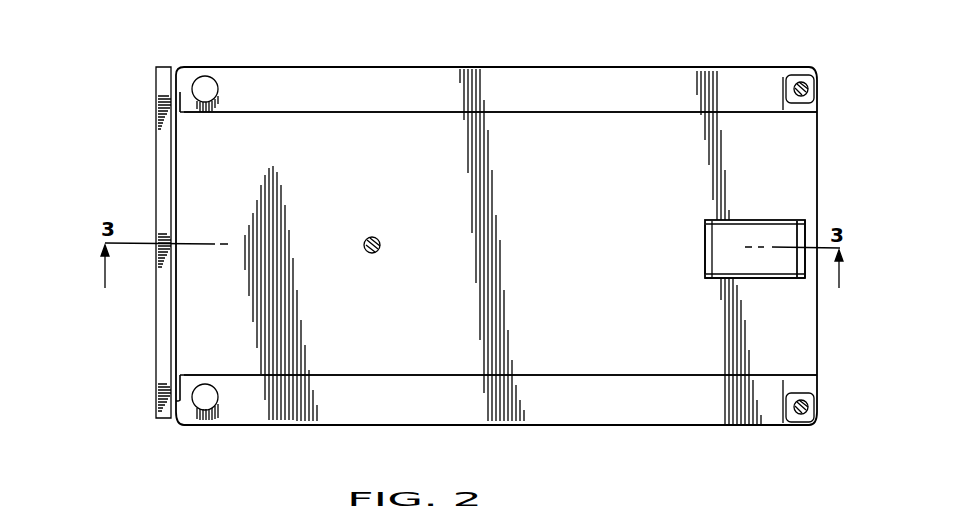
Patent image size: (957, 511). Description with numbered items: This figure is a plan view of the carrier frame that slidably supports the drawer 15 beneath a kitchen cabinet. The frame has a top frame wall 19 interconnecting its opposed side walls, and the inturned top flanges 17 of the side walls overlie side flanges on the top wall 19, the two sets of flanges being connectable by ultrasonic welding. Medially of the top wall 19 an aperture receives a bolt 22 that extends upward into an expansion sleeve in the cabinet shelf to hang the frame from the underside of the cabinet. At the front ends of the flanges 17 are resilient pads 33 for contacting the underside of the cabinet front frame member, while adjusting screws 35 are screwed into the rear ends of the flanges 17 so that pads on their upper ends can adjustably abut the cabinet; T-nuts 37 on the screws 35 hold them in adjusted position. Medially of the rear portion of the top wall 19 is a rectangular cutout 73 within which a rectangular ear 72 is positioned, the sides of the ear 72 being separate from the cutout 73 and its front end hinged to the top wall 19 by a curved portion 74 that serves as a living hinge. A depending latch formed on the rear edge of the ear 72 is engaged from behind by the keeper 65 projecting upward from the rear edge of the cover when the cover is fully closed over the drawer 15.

The drawer 15 is at (148, 340).
The inturned top flanges 17 is at (392, 362).
The top frame wall 19 is at (496, 246).
The bolt 22 is at (380, 240).
The resilient pads 33 is at (209, 388).
The adjusting screws 35 is at (800, 415).
The T-nuts 37 is at (809, 78).
The keeper 65 is at (798, 226).
The rectangular ear 72 is at (743, 231).
The rectangular cutout 73 is at (750, 283).
The curved portion 74 is at (706, 239).